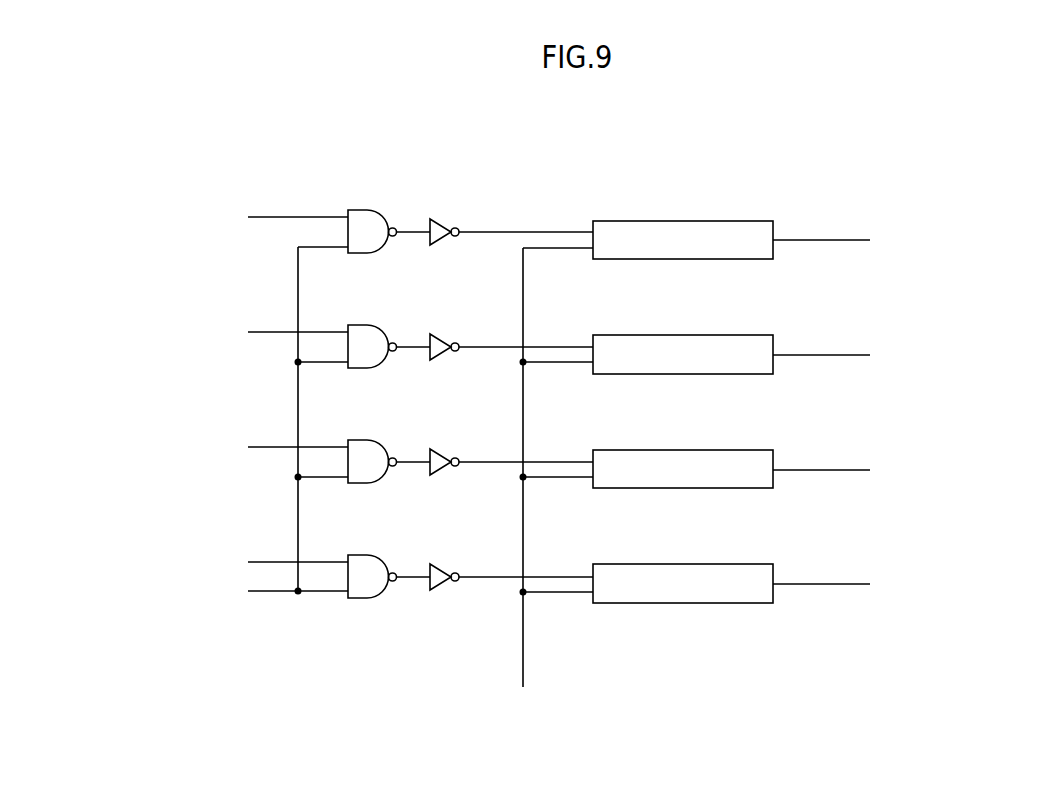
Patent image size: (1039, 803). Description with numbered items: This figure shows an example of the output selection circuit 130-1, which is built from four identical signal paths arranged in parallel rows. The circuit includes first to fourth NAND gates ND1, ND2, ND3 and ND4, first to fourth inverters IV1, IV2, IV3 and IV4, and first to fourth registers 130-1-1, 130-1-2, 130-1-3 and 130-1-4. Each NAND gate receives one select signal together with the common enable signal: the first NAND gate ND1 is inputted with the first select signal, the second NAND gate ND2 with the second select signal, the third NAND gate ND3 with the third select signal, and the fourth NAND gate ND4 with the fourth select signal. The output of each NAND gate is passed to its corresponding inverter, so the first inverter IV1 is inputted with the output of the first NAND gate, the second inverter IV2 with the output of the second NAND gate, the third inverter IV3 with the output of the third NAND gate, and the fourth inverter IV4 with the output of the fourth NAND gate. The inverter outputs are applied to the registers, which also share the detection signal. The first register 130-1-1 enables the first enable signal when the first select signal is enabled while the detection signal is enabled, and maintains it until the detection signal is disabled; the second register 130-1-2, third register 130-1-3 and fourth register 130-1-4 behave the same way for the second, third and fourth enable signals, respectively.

The output selection circuit 130-1 is at (1022, 132).
The first NAND gate ND1 is at (370, 210).
The second NAND gate ND2 is at (370, 325).
The third NAND gate ND3 is at (370, 440).
The fourth NAND gate ND4 is at (370, 555).
The first inverter IV1 is at (443, 219).
The second inverter IV2 is at (443, 334).
The third inverter IV3 is at (443, 449).
The fourth inverter IV4 is at (443, 564).
The first register 130-1-1 is at (710, 221).
The second register 130-1-2 is at (710, 335).
The third register 130-1-3 is at (710, 450).
The fourth register 130-1-4 is at (710, 564).